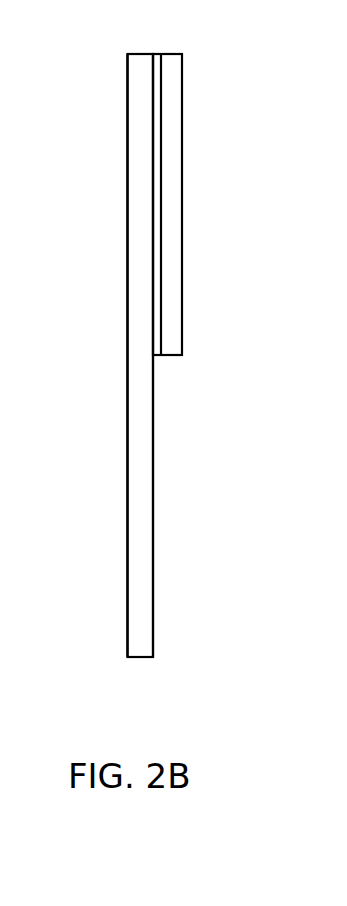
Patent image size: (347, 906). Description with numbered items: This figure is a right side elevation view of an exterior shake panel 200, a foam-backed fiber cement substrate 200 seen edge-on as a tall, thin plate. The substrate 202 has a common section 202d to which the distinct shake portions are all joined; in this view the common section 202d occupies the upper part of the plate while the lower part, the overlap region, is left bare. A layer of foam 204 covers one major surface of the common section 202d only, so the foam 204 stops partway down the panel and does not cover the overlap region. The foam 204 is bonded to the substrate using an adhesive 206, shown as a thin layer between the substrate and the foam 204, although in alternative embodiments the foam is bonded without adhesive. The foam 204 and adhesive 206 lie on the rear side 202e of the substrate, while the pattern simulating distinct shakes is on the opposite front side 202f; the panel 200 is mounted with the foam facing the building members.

The shake panel 200 is at (143, 727).
The substrate portion 202 is at (156, 478).
The common section 202d is at (153, 110).
The rear side 202e is at (153, 616).
The front side 202f is at (125, 478).
The foam 204 is at (182, 203).
The adhesive 206 is at (161, 252).